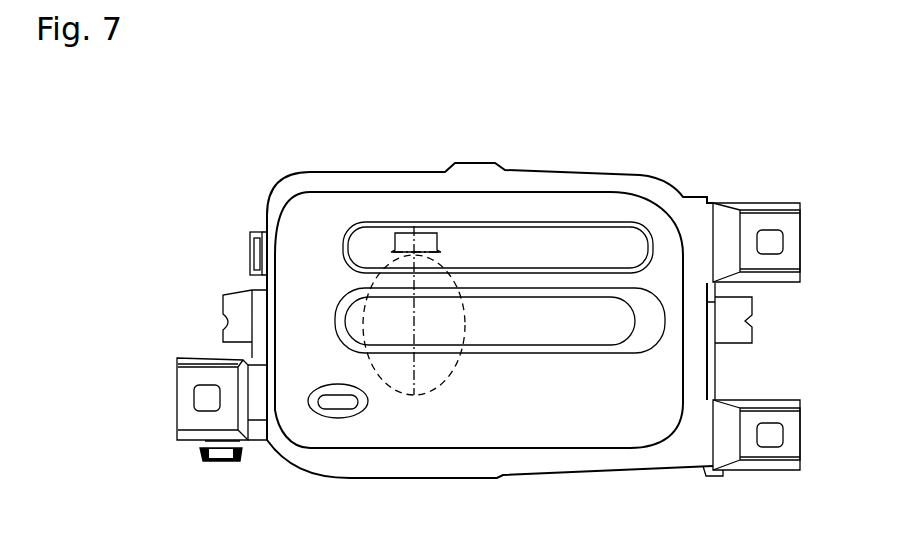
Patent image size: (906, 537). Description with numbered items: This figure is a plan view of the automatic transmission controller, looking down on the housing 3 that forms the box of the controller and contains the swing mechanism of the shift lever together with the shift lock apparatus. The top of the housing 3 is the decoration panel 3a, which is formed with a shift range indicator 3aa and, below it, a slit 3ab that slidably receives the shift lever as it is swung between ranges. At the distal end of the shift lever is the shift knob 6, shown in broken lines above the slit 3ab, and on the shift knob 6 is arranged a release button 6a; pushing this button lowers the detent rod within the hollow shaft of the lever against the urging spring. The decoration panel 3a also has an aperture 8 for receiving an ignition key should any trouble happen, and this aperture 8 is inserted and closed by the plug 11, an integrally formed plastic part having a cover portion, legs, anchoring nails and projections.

The housing 3 is at (586, 150).
The decoration panel 3a is at (327, 190).
The shift range indicator 3aa is at (627, 220).
The slit 3ab is at (583, 345).
The shift knob 6 is at (416, 395).
The release button 6a is at (413, 233).
The aperture 8 is at (343, 413).
The plug 11 is at (317, 412).